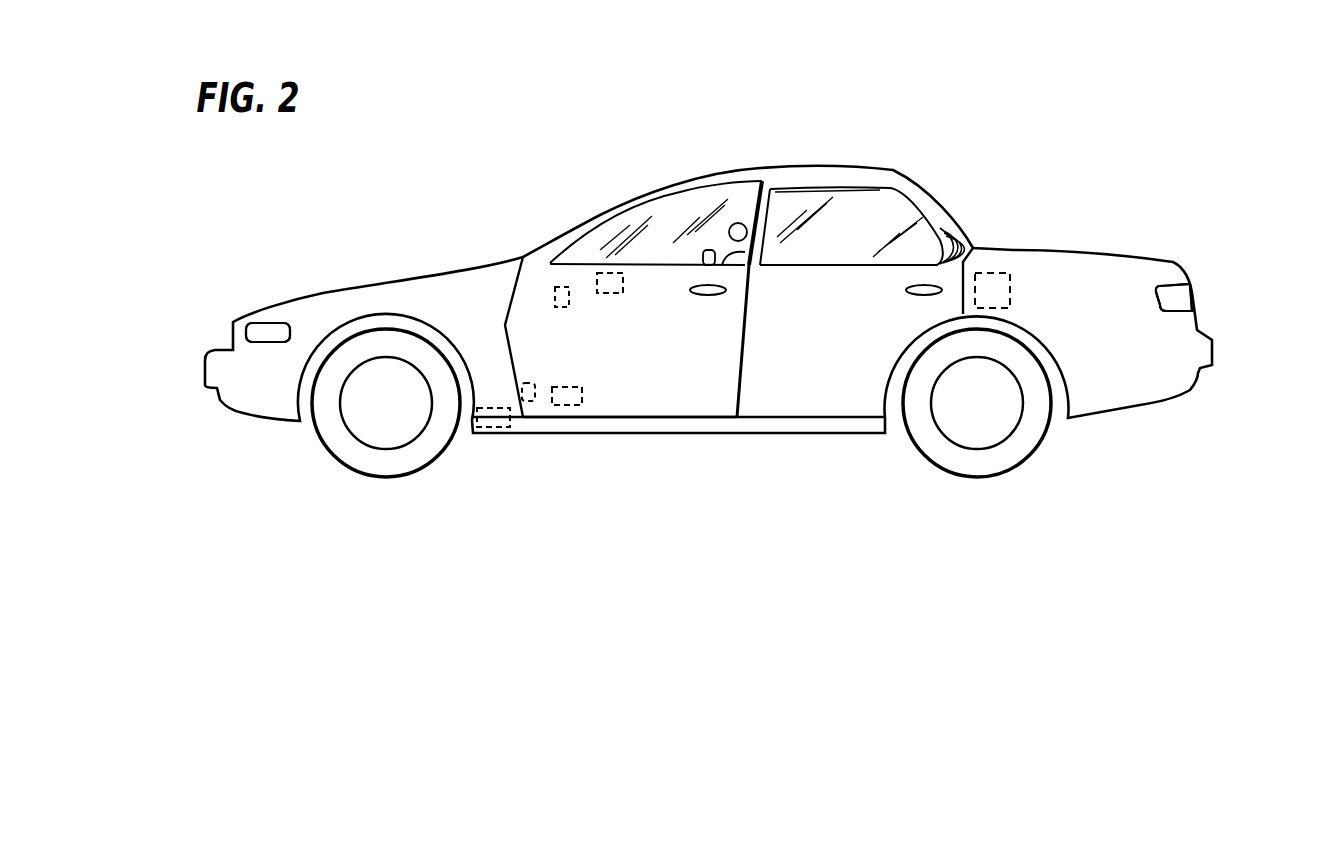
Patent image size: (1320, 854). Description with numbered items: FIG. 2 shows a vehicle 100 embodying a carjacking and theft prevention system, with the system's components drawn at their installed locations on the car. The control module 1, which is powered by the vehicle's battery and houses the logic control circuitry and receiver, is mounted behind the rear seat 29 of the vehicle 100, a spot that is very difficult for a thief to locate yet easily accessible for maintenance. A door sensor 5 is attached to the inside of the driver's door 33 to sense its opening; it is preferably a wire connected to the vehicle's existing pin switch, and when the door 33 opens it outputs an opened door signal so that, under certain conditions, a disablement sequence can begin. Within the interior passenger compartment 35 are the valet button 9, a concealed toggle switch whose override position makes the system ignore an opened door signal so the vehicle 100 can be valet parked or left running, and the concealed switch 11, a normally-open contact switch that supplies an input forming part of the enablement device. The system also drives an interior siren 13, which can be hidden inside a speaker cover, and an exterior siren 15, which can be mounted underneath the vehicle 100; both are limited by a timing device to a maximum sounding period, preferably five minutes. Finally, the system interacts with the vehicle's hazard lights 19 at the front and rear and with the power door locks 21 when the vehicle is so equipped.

The vehicle 100 is at (772, 152).
The control module 1 is at (999, 272).
The door sensor 5 is at (535, 402).
The valet button 9 is at (587, 278).
The concealed switch 11 is at (557, 290).
The interior siren 13 is at (582, 397).
The exterior siren 15 is at (495, 427).
The hazard lights 19 is at (262, 328).
The power door locks 21 is at (710, 258).
The rear seat 29 is at (940, 228).
The driver's door 33 is at (698, 393).
The interior passenger compartment 35 is at (838, 221).